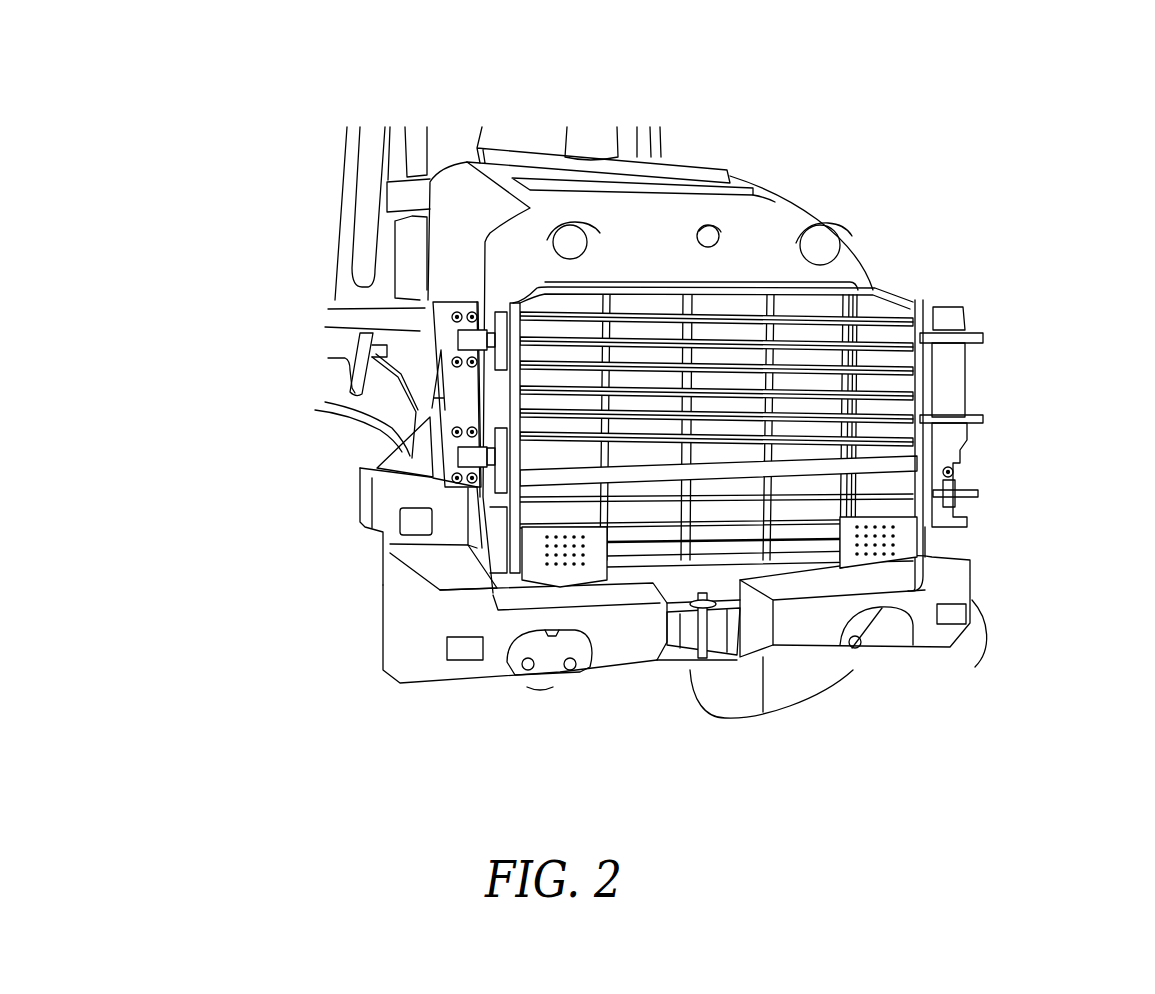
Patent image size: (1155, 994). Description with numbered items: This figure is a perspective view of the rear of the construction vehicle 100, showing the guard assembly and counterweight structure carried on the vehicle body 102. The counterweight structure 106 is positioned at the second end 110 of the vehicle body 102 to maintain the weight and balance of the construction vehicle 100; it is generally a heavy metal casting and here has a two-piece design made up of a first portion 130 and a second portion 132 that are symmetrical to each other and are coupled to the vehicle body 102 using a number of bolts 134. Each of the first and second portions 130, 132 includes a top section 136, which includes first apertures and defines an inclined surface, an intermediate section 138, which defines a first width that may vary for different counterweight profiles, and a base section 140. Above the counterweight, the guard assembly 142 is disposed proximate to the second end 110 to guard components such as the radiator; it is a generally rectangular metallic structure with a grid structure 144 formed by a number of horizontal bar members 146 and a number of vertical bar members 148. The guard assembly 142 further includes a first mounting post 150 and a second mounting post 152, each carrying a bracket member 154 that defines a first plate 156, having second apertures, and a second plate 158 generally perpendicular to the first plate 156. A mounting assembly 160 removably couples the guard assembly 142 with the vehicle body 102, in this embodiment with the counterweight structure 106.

The construction vehicle 100 is at (1045, 95).
The vehicle body 102 is at (925, 670).
The counterweight structure 106 is at (673, 693).
The second end 110 is at (634, 735).
The first portion 130 is at (410, 636).
The second portion 132 is at (987, 578).
The bolts 134 is at (577, 670).
The top section 136 is at (415, 522).
The intermediate section 138 is at (364, 553).
The base section 140 is at (400, 672).
The guard assembly 142 is at (908, 284).
The grid structure 144 is at (801, 361).
The horizontal bar members 146 is at (893, 344).
The vertical bar members 148 is at (765, 427).
The first mounting post 150 is at (463, 392).
The second mounting post 152 is at (957, 381).
The bracket member 154 is at (362, 469).
The first plate 156 is at (405, 460).
The second plate 158 is at (410, 455).
The mounting assembly 160 is at (341, 625).